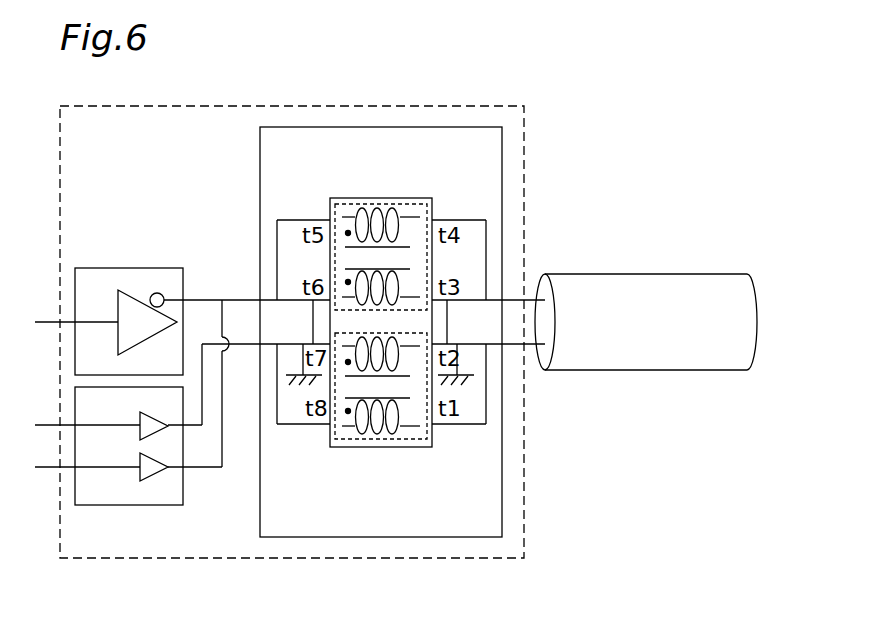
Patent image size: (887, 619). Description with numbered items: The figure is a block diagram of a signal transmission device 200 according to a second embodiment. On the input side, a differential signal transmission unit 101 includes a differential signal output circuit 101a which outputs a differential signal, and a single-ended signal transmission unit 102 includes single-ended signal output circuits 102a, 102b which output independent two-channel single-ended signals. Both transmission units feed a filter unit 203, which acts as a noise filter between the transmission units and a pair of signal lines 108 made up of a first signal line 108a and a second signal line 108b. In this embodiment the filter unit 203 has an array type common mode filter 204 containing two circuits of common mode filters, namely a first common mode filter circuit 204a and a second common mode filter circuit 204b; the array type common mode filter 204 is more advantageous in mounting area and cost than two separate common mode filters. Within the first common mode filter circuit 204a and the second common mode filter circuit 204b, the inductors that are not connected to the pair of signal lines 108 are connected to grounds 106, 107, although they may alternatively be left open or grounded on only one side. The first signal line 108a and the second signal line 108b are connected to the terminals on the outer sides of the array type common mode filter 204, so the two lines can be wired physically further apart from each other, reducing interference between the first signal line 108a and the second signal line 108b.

The signal transmission device 200 is at (462, 101).
The filter unit 203 is at (258, 193).
The array type common mode filter 204 is at (349, 323).
The first common mode filter circuit 204a is at (384, 447).
The second common mode filter circuit 204b is at (396, 199).
The differential signal transmission unit 101 is at (125, 283).
The differential signal output circuit 101a is at (128, 298).
The single-ended signal transmission unit 102 is at (168, 463).
The single-ended signal output circuit 102a is at (146, 415).
The single-ended signal output circuit 102b is at (146, 474).
The ground 106 is at (300, 382).
The ground 107 is at (466, 382).
The pair of signal lines 108 is at (700, 371).
The first signal line 108a is at (523, 345).
The second signal line 108b is at (524, 300).